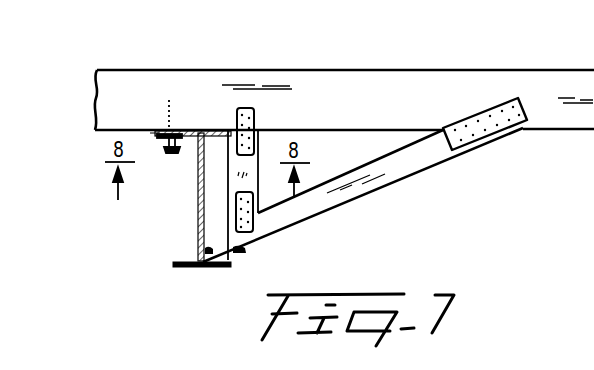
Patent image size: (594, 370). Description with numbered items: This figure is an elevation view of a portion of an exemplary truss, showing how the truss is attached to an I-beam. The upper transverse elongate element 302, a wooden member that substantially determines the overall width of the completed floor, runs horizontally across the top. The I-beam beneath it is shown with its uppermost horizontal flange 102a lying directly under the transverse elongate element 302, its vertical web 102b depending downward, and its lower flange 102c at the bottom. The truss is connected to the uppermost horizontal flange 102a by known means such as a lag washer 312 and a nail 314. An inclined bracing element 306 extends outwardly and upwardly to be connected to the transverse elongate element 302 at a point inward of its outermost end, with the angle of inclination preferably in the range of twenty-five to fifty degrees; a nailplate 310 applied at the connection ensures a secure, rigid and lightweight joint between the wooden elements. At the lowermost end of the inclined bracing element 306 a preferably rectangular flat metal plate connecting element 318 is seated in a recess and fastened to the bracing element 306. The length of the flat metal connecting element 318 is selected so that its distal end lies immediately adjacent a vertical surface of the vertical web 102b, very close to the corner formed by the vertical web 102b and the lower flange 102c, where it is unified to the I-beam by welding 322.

The upper transverse elongate element 302 is at (347, 80).
The inclined bracing element 306 is at (412, 167).
The nailplate 310 is at (518, 98).
The lag washer 312 is at (164, 140).
The nail 314 is at (174, 102).
The flat metal plate connecting element 318 is at (254, 241).
The welding 322 is at (231, 253).
The uppermost horizontal flange 102a is at (192, 138).
The vertical web 102b is at (197, 214).
The lower flange 102c is at (178, 256).